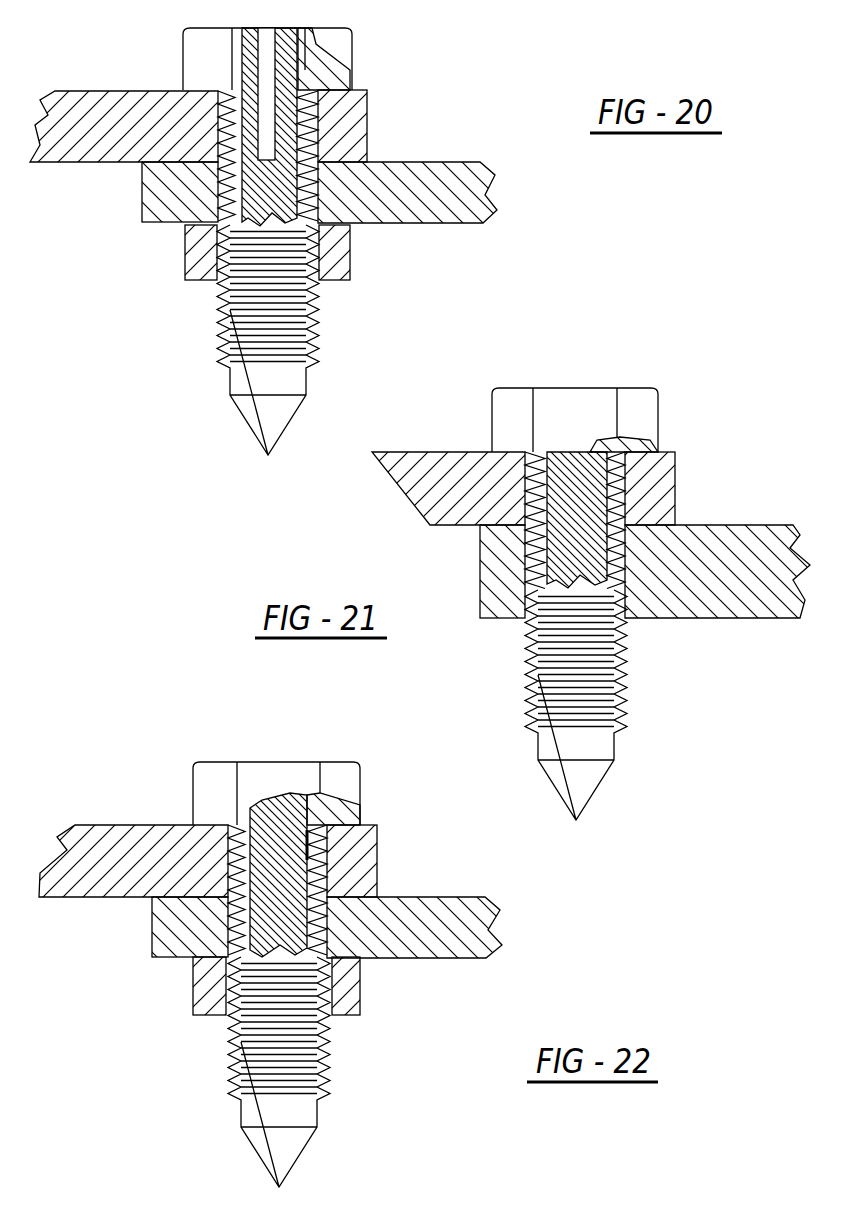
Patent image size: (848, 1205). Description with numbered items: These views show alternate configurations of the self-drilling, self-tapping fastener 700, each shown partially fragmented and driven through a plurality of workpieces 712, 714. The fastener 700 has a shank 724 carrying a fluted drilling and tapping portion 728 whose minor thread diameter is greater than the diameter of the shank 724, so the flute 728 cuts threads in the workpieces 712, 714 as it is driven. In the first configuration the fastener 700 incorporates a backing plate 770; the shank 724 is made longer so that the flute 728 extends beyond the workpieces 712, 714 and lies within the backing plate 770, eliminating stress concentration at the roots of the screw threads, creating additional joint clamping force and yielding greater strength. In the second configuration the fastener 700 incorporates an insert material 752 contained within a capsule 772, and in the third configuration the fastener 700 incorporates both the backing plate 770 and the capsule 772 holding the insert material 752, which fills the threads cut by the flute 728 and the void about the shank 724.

In FIG. 20, the fastener 700 is at (372, 42).
In FIG. 21, the fastener 700 is at (678, 365).
In FIG. 22, the fastener 700 is at (165, 772).
In FIG. 20, the workpiece 712 is at (357, 117).
In FIG. 20, the workpiece 714 is at (413, 207).
In FIG. 20, the shank 724 is at (215, 135).
In FIG. 20, the fluted or drilling/tapping portion 728 is at (293, 323).
In FIG. 20, the backing plate 770 is at (348, 252).
In FIG. 22, the backing plate 770 is at (350, 993).
In FIG. 21, the insert material 752 is at (648, 460).
In FIG. 22, the insert material 752 is at (312, 866).
In FIG. 21, the capsule 772 is at (625, 478).
In FIG. 22, the capsule 772 is at (322, 845).